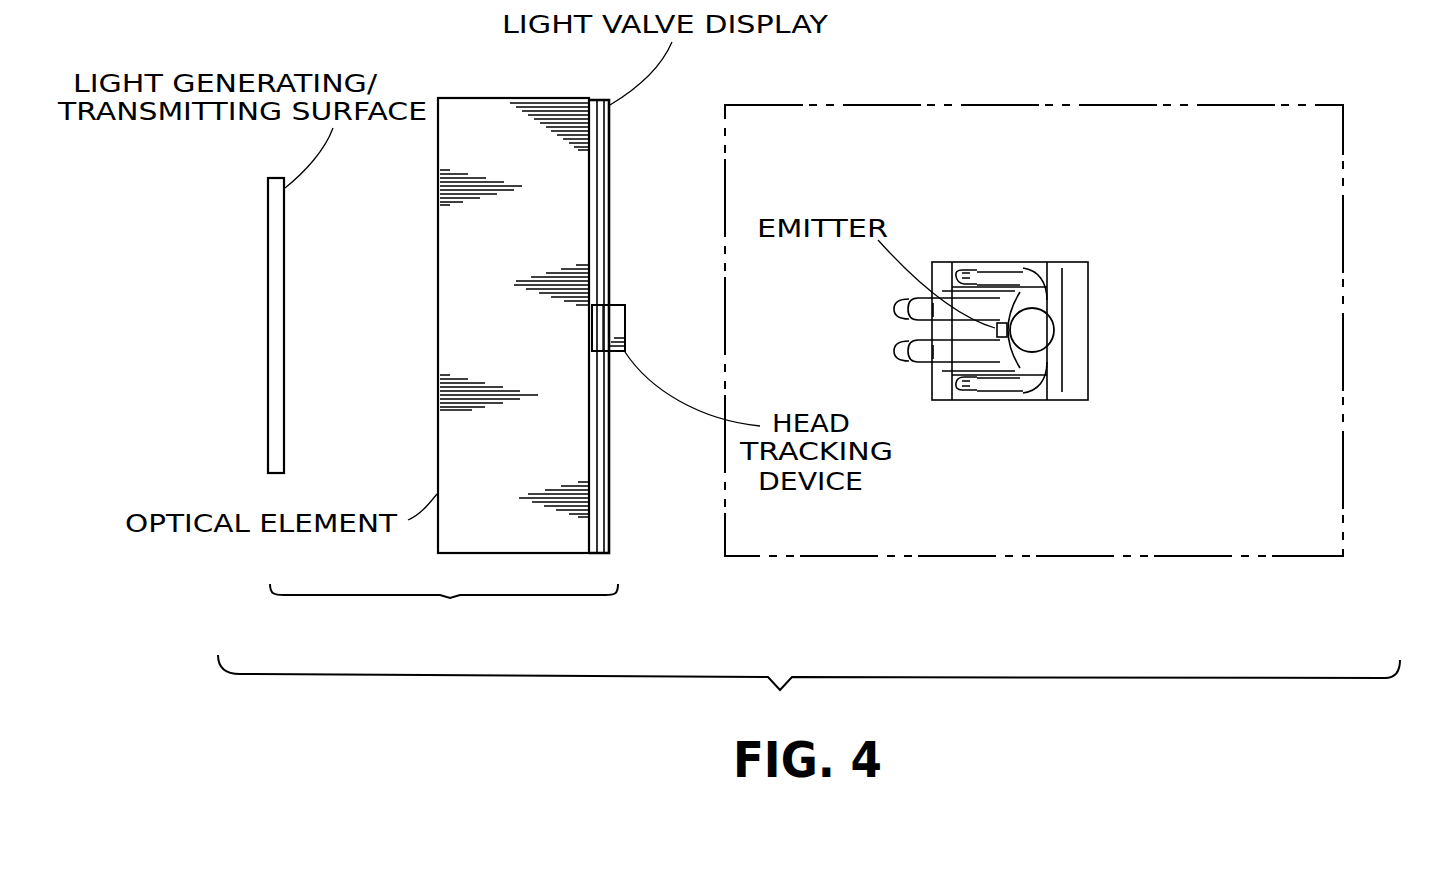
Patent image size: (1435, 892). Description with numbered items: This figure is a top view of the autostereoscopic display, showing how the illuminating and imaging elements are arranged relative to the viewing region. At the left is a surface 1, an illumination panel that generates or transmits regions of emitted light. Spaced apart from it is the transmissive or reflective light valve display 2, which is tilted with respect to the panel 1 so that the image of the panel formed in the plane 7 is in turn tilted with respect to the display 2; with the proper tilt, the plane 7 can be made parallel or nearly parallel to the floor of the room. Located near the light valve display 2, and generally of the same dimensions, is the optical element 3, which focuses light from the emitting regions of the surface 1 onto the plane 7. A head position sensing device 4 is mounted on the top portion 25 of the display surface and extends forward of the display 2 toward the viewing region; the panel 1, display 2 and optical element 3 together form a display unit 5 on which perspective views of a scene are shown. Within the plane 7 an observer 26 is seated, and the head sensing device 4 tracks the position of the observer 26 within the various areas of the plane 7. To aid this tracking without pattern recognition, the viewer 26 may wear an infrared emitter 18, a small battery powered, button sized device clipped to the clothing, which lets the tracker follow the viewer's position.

The surface 1 is at (285, 361).
The light valve display 2 is at (612, 132).
The optical element 3 is at (534, 102).
The head position sensing device 4 is at (612, 304).
The transmissive display 5 is at (450, 597).
The plane 7 is at (1180, 104).
The infrared emitter 18 is at (997, 338).
The top portion 25 is at (588, 214).
The observer 26 is at (1050, 315).